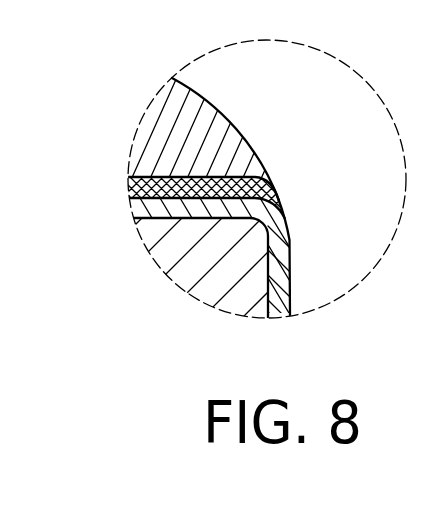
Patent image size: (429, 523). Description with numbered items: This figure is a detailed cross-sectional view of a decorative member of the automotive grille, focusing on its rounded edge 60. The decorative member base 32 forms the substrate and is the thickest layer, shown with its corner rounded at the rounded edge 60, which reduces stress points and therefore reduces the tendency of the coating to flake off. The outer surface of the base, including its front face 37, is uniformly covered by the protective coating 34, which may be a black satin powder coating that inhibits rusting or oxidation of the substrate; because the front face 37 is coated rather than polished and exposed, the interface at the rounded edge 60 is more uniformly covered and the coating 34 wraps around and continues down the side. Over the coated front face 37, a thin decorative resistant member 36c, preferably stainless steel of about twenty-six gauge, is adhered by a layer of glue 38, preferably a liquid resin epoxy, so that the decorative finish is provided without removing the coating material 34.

The decorative member base 32 is at (187, 267).
The protective coating 34 is at (277, 260).
The decorative resistant member 36c is at (160, 125).
The front face 37 is at (203, 212).
The glue 38 is at (134, 188).
The rounded edge 60 is at (290, 173).